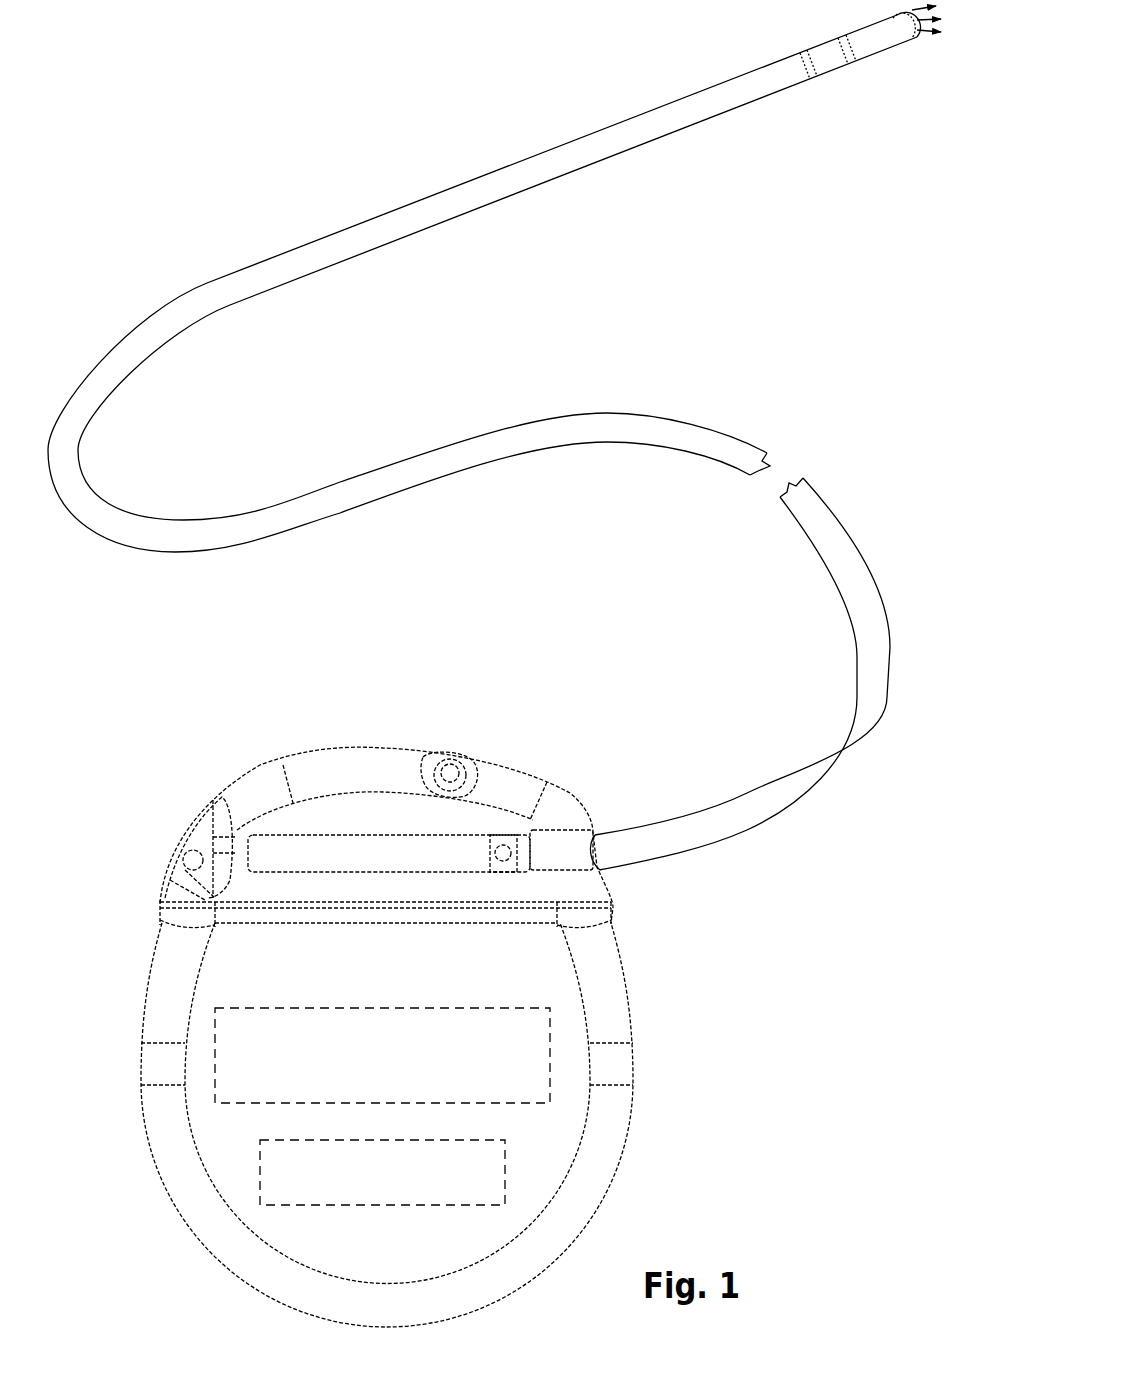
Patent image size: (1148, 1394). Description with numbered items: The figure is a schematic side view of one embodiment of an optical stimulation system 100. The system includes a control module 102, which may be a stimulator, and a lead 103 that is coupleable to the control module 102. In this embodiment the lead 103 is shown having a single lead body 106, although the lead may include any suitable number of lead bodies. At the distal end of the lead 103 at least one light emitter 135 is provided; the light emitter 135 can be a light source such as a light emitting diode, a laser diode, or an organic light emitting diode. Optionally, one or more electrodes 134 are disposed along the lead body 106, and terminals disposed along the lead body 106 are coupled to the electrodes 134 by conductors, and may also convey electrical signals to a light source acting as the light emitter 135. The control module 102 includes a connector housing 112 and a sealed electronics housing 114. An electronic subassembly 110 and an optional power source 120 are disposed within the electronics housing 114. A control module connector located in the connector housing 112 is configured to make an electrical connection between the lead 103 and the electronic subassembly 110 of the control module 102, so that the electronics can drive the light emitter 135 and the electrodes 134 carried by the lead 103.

The optical stimulation system 100 is at (492, 663).
The lead 103 is at (492, 435).
The lead body 106 is at (663, 428).
The electrodes 134 is at (810, 55).
The light emitter 135 is at (903, 32).
The control module 102 is at (338, 1011).
The connector housing 112 is at (187, 793).
The electronics housing 114 is at (102, 990).
The electronic subassembly 110 is at (230, 1060).
The power source 120 is at (280, 1178).